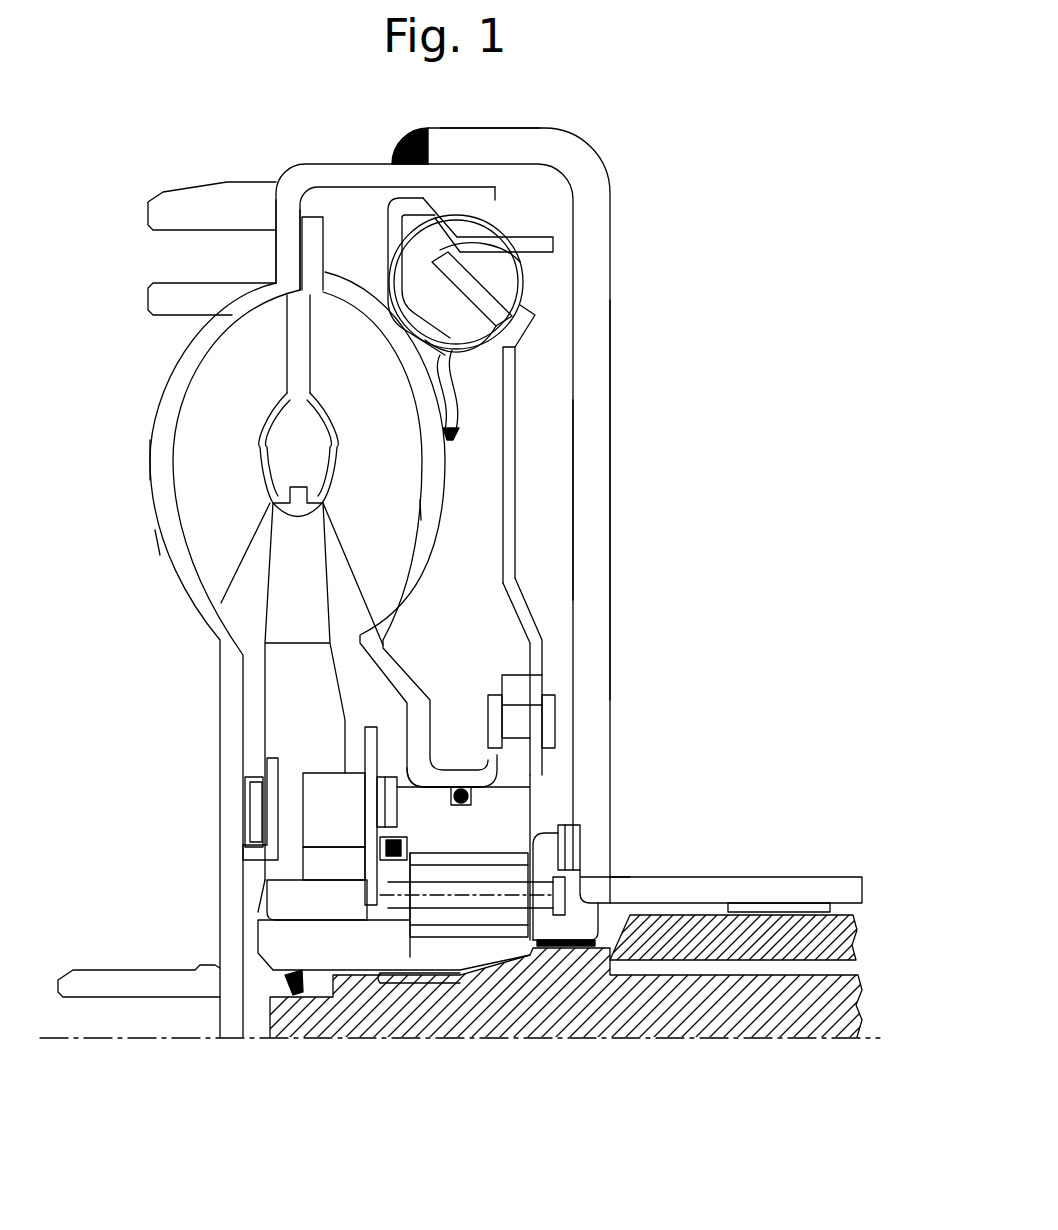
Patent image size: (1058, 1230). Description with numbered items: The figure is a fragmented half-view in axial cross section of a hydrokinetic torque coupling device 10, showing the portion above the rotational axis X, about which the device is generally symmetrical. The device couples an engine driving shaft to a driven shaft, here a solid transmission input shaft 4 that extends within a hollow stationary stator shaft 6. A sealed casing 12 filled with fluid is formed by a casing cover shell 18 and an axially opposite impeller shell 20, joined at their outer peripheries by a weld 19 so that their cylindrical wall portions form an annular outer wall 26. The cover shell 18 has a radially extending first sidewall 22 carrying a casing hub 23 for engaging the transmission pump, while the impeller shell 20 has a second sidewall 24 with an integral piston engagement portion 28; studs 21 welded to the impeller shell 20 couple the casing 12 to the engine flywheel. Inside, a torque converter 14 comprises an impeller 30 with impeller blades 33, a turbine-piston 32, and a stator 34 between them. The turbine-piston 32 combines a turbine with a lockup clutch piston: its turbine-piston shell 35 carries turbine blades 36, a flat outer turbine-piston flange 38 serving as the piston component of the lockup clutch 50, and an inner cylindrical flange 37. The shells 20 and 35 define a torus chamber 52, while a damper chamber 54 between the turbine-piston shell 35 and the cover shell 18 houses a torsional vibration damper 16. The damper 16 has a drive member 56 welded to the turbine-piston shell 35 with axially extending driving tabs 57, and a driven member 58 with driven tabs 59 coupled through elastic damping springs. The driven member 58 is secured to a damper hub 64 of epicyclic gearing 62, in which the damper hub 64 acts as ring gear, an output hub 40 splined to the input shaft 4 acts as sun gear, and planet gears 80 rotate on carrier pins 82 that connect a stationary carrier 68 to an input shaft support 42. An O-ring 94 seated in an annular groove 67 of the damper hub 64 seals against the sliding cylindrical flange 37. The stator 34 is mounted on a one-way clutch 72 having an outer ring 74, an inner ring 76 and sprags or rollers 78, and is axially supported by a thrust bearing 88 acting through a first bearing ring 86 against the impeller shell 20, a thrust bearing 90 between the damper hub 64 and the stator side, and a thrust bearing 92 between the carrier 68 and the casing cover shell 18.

The transmission input shaft 4 is at (835, 1015).
The stationary stator shaft 6 is at (835, 945).
The hydrokinetic torque coupling device 10 is at (703, 170).
The sealed casing 12 is at (585, 133).
The torque converter 14 is at (160, 403).
The torsional vibration damper 16 is at (530, 350).
The casing cover shell 18 is at (612, 520).
The weld 19 is at (410, 130).
The impeller shell 20 is at (157, 545).
The studs 21 is at (181, 192).
The first sidewall 22 is at (598, 432).
The casing hub 23 is at (770, 885).
The second sidewall 24 is at (177, 350).
The annular outer wall 26 is at (490, 127).
The piston engagement portion 28 is at (283, 262).
The impeller 30 is at (148, 470).
The turbine-piston 32 is at (412, 518).
The impeller blades 33 is at (200, 433).
The stator 34 is at (263, 603).
The turbine-piston shell 35 is at (425, 552).
The turbine blades 36 is at (363, 433).
The cylindrical flange 37 is at (463, 772).
The turbine-piston flange 38 is at (315, 245).
The output hub 40 is at (473, 955).
The input shaft support 42 is at (273, 940).
The lockup clutch 50 is at (333, 240).
The torus chamber 52 is at (283, 460).
The damper chamber 54 is at (447, 602).
The drive member 56 is at (455, 420).
The driving tabs 57 is at (485, 243).
The driven member 58 is at (525, 602).
The driven tabs 59 is at (470, 277).
The epicyclic gearing 62 is at (538, 823).
The damper hub 64 is at (495, 810).
The annular groove 67 is at (465, 818).
The stationary carrier 68 is at (600, 928).
The one-way clutch 72 is at (302, 813).
The outer ring 74 is at (318, 823).
The inner ring 76 is at (318, 915).
The sprags or rollers 78 is at (318, 877).
The planet gears 80 is at (503, 917).
The carrier pins 82 is at (430, 903).
The first bearing ring 86 is at (273, 770).
The thrust bearing 88 is at (255, 812).
The thrust bearing 90 is at (385, 779).
The thrust bearing 92 is at (570, 848).
The O-ring 94 is at (463, 806).
The rotational axis X is at (65, 1043).